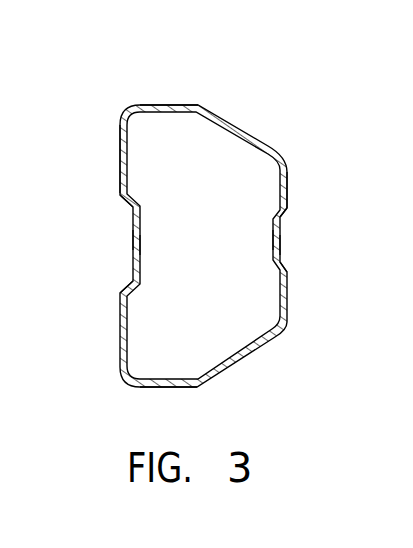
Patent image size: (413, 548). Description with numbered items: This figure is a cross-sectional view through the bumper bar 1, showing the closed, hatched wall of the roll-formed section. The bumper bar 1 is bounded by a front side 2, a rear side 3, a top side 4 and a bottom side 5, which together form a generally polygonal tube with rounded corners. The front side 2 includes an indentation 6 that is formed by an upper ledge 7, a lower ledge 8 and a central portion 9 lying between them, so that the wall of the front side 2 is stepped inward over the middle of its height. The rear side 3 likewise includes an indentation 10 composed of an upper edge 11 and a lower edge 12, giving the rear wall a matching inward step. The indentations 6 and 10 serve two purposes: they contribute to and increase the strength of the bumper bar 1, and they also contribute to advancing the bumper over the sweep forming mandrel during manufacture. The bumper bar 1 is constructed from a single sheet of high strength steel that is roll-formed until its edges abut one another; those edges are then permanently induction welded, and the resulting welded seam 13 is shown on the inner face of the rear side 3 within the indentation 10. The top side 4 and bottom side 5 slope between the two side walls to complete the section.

The bumper bar 1 is at (238, 129).
The front side 2 is at (121, 163).
The rear side 3 is at (288, 202).
The top side 4 is at (197, 105).
The bottom side 5 is at (194, 389).
The indentation 6 is at (133, 238).
The upper ledge 7 is at (128, 208).
The lower ledge 8 is at (122, 284).
The central portion 9 is at (143, 246).
The indentation 10 is at (273, 240).
The upper edge 11 is at (284, 220).
The lower edge 12 is at (282, 270).
The welded seam 13 is at (272, 247).